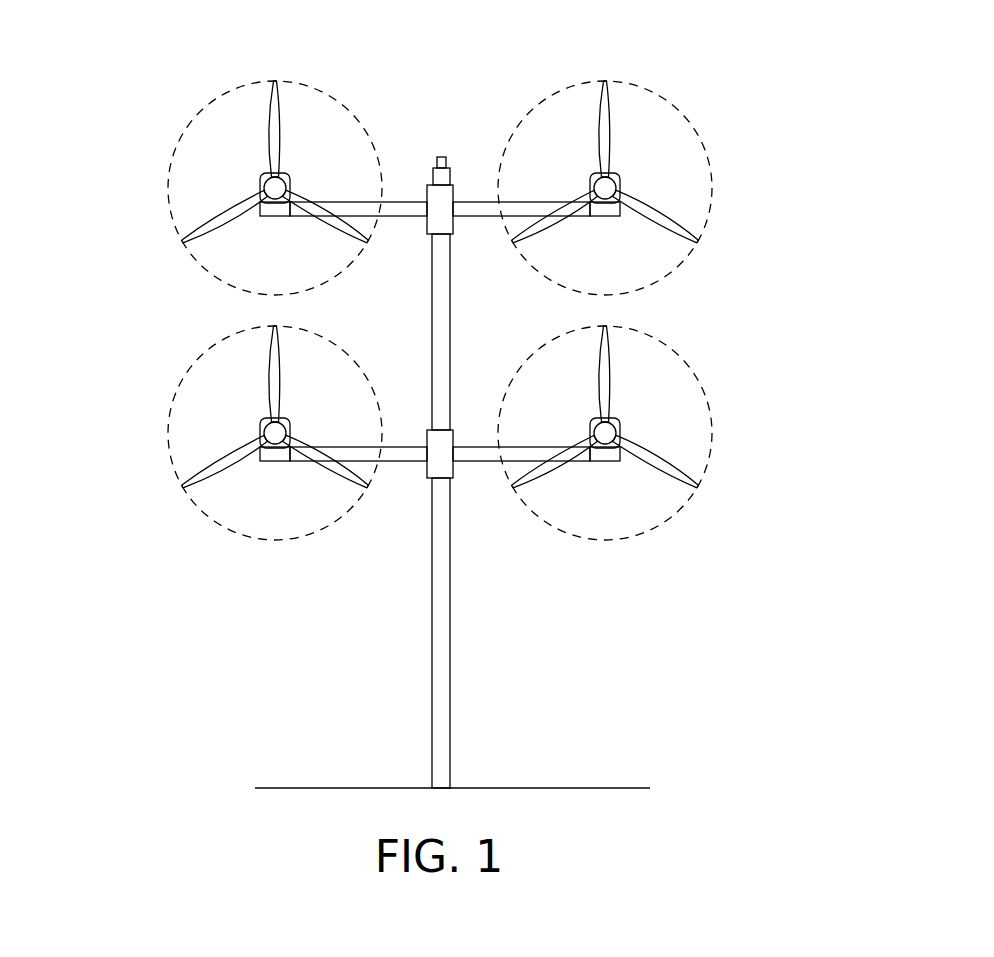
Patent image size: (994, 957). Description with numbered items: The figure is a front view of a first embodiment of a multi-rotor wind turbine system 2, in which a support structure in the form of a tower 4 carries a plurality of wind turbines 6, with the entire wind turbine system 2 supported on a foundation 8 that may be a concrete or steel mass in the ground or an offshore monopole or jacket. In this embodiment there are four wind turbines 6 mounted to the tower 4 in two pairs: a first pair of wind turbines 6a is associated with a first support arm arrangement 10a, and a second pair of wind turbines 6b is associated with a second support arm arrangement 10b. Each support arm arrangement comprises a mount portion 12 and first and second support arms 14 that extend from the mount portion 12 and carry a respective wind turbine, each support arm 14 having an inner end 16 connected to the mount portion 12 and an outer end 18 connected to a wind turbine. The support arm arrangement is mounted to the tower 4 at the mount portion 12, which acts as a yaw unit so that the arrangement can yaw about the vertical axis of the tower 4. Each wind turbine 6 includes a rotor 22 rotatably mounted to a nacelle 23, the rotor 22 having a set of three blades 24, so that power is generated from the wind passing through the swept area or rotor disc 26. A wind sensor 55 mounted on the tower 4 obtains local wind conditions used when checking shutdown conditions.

The wind turbine system 2 is at (686, 50).
The tower 4 is at (450, 692).
The wind turbines 6 is at (112, 270).
The first pair of wind turbines 6a is at (299, 166).
The second pair of wind turbines 6b is at (286, 470).
The foundation 8 is at (612, 788).
The first support arm arrangement 10a is at (480, 115).
The second support arm arrangement 10b is at (487, 500).
The mount portion 12 is at (454, 192).
The support arms 14 is at (400, 219).
The inner end 16 is at (423, 231).
The outer end 18 is at (267, 219).
The rotor 22 is at (290, 190).
The nacelle 23 is at (262, 183).
The blades 24 is at (268, 102).
The swept area 26 is at (183, 134).
The wind sensor 55 is at (437, 156).